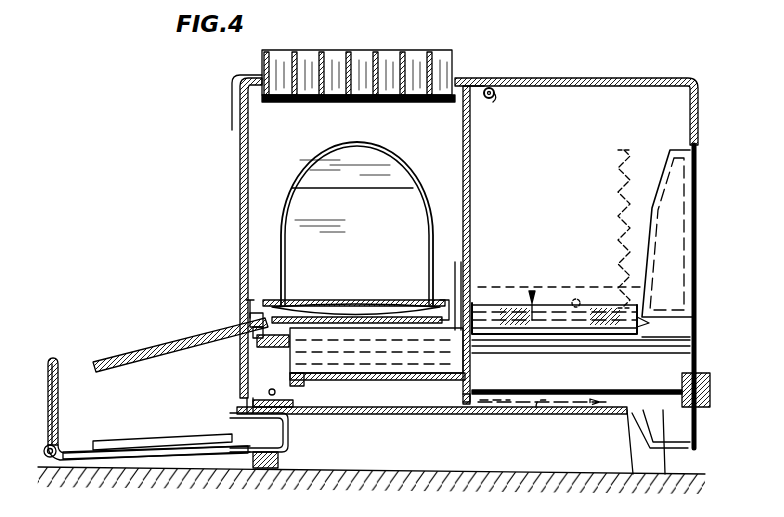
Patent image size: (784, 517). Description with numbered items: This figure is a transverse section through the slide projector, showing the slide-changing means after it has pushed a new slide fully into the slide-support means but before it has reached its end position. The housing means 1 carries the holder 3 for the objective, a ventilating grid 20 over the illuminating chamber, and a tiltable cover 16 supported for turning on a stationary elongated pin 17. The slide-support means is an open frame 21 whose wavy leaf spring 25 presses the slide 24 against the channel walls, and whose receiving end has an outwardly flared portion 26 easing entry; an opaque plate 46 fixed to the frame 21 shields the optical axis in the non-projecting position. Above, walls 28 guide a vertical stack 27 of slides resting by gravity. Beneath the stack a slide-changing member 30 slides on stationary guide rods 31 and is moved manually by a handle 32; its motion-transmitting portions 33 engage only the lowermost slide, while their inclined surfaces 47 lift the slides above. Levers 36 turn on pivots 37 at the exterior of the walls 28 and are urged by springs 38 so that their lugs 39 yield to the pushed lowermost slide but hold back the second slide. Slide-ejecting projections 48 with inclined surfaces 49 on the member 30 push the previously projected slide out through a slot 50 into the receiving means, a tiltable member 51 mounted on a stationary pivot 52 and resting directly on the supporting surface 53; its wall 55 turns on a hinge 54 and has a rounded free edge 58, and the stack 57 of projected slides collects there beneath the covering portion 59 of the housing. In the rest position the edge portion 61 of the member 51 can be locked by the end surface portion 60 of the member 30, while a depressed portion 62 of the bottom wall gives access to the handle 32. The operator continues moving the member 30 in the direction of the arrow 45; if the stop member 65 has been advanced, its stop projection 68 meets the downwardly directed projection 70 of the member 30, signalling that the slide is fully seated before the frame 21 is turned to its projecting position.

The projector housing means 1 is at (467, 78).
The holder 3 is at (402, 163).
The tiltable cover 16 is at (590, 78).
The stationary elongated pin 17 is at (492, 98).
The ventilating grid 20 is at (330, 62).
The open frame 21 is at (288, 305).
The slide 24 is at (364, 320).
The wavy leaf spring 25 is at (326, 315).
The outwardly flared portion 26 is at (447, 302).
The stack 27 is at (532, 292).
The walls 28 is at (695, 190).
The slide-changing member 30 is at (375, 358).
The stationary guide rods 31 is at (565, 348).
The handle 32 is at (700, 376).
The motion-transmitting portions 33 is at (440, 340).
The levers 36 is at (500, 287).
The pivots 37 is at (576, 299).
The springs 38 is at (616, 176).
The lugs 39 is at (457, 268).
The arrow 45 is at (602, 406).
The opaque plate 46 is at (422, 200).
The inclined surfaces 47 is at (470, 332).
The slide-ejecting projections 48 is at (258, 334).
The inclined surfaces 49 is at (258, 320).
The slot 50 is at (251, 300).
The tiltable member 51 is at (248, 436).
The stationary pivot 52 is at (274, 392).
The surface 53 is at (350, 469).
The pivot pin or hinge 54 is at (44, 452).
The wall 55 is at (50, 400).
The stack of projected slides 57 is at (135, 432).
The rounded free edge 58 is at (56, 360).
The covering portion 59 is at (235, 104).
The downwardly directed end surface portion 60 is at (290, 400).
The edge portion 61 is at (247, 390).
The depressed portion 62 is at (690, 423).
The stop member 65 is at (540, 410).
The stop projection 68 is at (454, 410).
The downwardly directed projection 70 is at (492, 407).